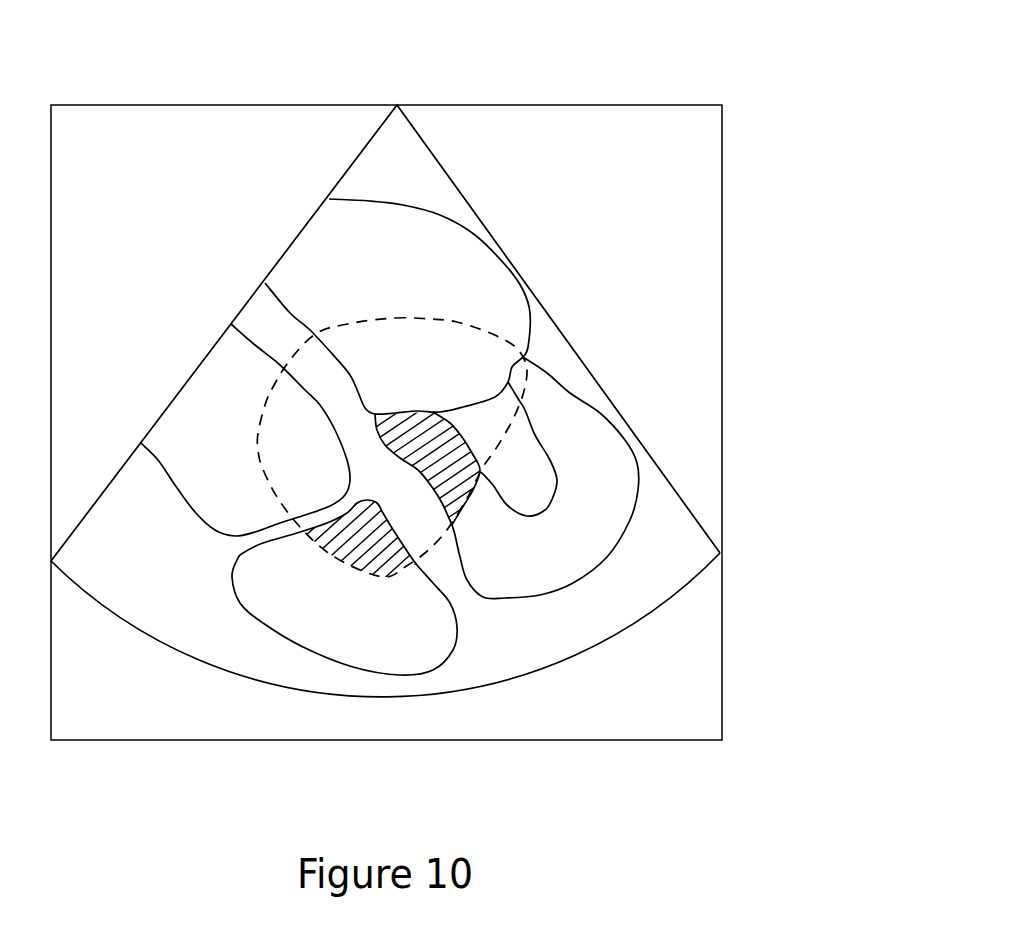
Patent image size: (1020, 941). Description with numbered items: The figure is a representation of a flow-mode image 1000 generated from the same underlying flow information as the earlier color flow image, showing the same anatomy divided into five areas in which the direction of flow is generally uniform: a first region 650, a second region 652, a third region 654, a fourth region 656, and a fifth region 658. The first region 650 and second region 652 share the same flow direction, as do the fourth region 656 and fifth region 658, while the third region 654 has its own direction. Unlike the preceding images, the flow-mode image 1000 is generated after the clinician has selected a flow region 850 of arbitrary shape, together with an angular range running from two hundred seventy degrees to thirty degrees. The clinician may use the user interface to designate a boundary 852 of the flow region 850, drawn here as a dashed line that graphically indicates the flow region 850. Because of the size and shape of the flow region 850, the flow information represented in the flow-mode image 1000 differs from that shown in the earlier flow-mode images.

The flow-mode image 1000 is at (713, 46).
The first region 650 is at (242, 460).
The second region 652 is at (433, 302).
The third region 654 is at (543, 490).
The fourth region 656 is at (568, 568).
The fifth region 658 is at (375, 612).
The flow region 850 is at (457, 362).
The boundary 852 is at (505, 346).